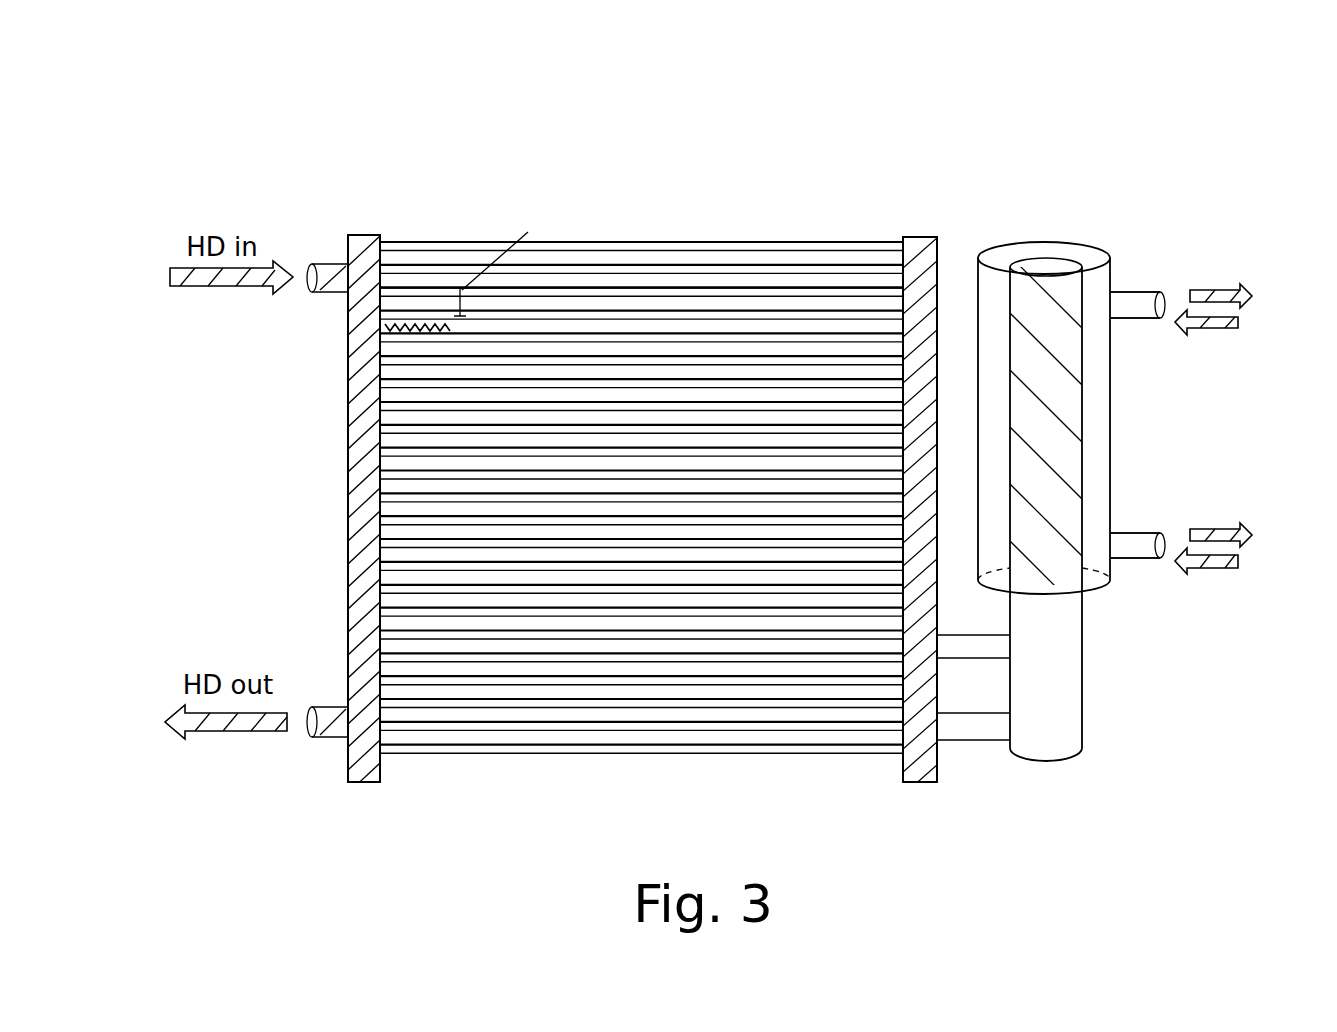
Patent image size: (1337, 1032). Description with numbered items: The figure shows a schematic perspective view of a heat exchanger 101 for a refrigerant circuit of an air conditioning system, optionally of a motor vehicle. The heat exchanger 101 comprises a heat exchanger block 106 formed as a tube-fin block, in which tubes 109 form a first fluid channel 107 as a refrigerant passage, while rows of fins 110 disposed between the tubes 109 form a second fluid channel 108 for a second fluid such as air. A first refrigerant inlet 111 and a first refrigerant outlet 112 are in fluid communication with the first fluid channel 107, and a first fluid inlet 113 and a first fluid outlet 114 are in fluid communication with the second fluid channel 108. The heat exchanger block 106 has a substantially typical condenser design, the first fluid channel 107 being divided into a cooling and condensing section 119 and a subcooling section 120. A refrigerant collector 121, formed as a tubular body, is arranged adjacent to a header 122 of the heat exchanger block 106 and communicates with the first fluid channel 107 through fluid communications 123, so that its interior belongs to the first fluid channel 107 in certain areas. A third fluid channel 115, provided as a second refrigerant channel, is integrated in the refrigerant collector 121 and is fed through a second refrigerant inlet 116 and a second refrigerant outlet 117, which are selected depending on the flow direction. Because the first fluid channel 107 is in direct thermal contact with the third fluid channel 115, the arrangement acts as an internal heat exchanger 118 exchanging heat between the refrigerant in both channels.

The heat exchanger 101 is at (880, 100).
The heat exchanger block 106 is at (608, 276).
The first fluid channel 107 is at (452, 248).
The second fluid channel 108 is at (793, 258).
The tubes 109 is at (528, 232).
The fins 110 is at (383, 322).
The first refrigerant inlet 111 is at (323, 272).
The first refrigerant outlet 112 is at (323, 732).
The first fluid inlet 113 is at (868, 230).
The first fluid outlet 114 is at (859, 310).
The third fluid channel 115 is at (1117, 290).
The second refrigerant inlet 116 is at (1140, 303).
The second refrigerant outlet 117 is at (1135, 425).
The internal heat exchanger 118 is at (1135, 598).
The cooling and condensing section 119 is at (686, 296).
The subcooling section 120 is at (566, 733).
The refrigerant collector 121 is at (1070, 716).
The header 122 is at (940, 260).
The fluid communications 123 is at (983, 650).